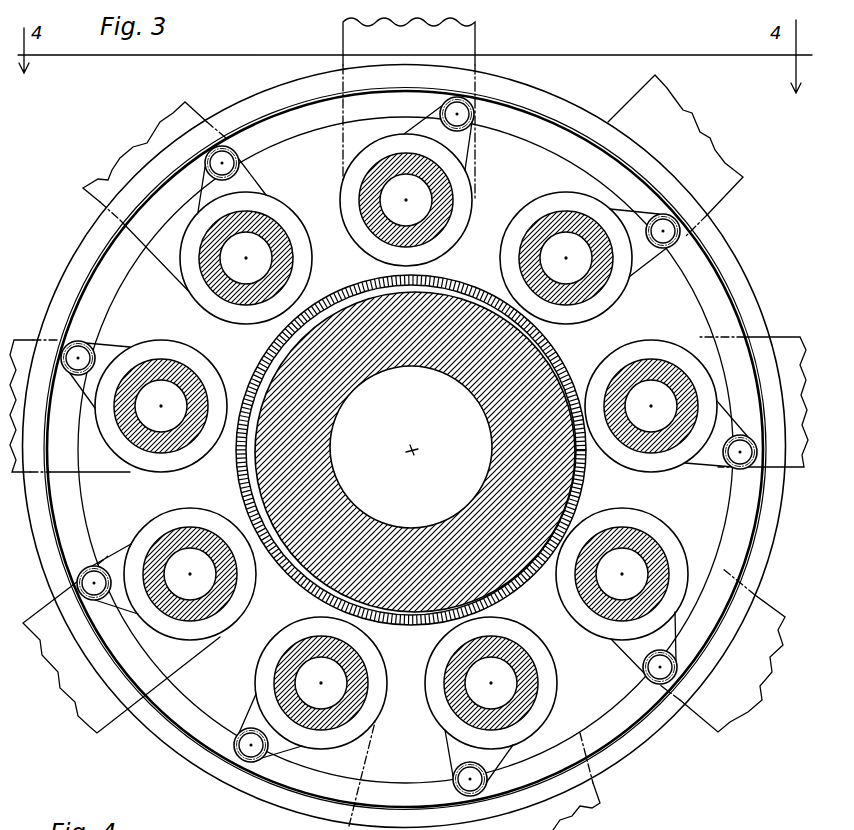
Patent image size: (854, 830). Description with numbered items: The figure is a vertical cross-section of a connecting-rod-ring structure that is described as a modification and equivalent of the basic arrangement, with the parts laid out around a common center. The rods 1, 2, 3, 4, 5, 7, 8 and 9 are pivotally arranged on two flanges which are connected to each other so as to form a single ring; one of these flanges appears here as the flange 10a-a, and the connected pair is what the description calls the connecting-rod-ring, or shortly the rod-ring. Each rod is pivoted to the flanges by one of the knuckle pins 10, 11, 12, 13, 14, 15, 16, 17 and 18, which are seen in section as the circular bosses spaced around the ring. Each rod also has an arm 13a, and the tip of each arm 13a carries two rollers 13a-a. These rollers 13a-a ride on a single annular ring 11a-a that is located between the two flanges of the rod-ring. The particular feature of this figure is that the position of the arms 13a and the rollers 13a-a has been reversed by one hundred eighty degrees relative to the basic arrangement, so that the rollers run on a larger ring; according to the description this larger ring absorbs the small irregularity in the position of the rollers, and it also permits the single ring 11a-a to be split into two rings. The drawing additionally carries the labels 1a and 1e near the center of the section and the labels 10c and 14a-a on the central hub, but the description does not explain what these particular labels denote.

The rod 1 is at (409, 109).
The center point 1a is at (413, 452).
The center axis 1e is at (403, 453).
The rod 2 is at (675, 155).
The rod 3 is at (754, 402).
The rod 4 is at (722, 650).
The rod 5 is at (474, 776).
The rod 7 is at (121, 644).
The rod 8 is at (70, 406).
The rod 9 is at (154, 202).
The knuckle pin 10 is at (452, 200).
The flange 10a-a is at (700, 285).
The central hub ring 10c is at (556, 354).
The knuckle pin 11 is at (614, 292).
The annular ring 11a-a is at (708, 216).
The knuckle pin 12 is at (668, 468).
The knuckle pin 13 is at (596, 622).
The arm 13a is at (466, 154).
The rollers 13a-a is at (478, 110).
The knuckle pin 14 is at (428, 665).
The central hub section 14a-a is at (415, 452).
The knuckle pin 15 is at (259, 665).
The knuckle pin 16 is at (197, 512).
The knuckle pin 17 is at (195, 374).
The knuckle pin 18 is at (266, 215).